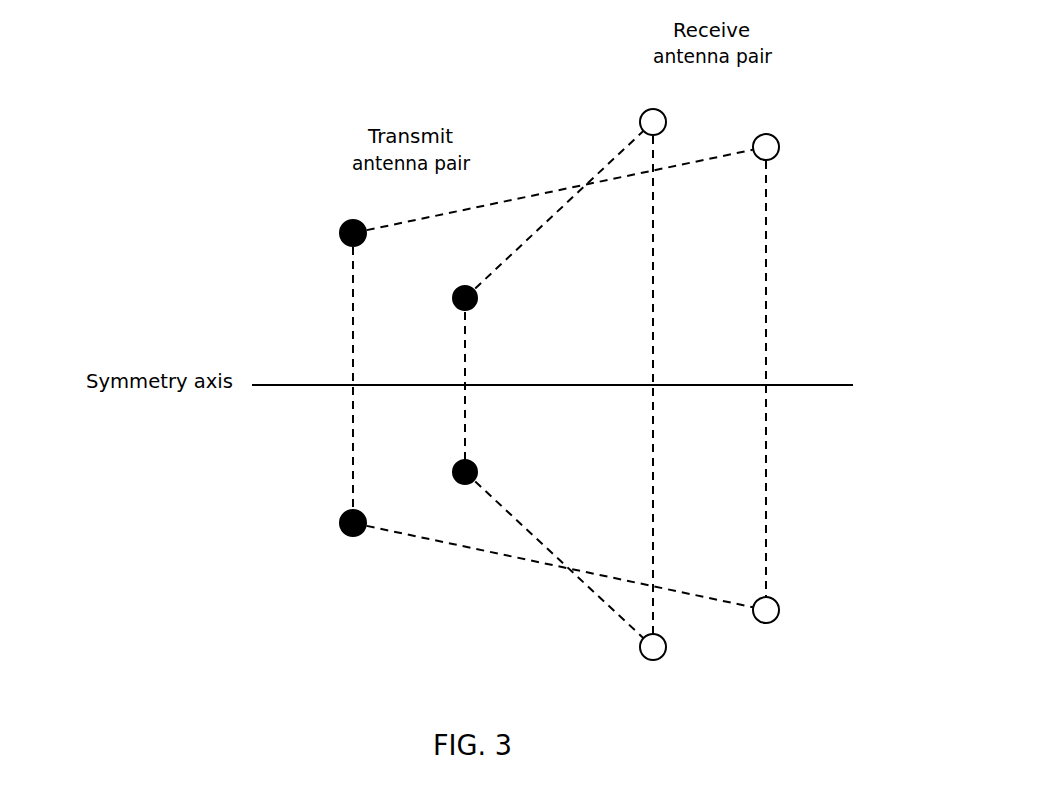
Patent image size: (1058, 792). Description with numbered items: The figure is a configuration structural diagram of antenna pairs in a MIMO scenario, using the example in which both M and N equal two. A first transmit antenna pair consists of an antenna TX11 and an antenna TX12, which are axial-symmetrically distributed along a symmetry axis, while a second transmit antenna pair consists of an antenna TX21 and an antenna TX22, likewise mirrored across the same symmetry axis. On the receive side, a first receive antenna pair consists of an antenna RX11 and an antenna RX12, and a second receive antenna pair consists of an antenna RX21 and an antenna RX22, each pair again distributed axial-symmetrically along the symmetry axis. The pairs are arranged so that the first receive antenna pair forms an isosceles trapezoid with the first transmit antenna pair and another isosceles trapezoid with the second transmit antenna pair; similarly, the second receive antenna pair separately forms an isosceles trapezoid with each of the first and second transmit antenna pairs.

The antenna TX11 is at (313, 233).
The antenna TX12 is at (320, 525).
The antenna TX21 is at (434, 303).
The antenna TX22 is at (431, 468).
The antenna RX11 is at (619, 112).
The antenna RX12 is at (629, 661).
The antenna RX21 is at (799, 149).
The antenna RX22 is at (796, 620).